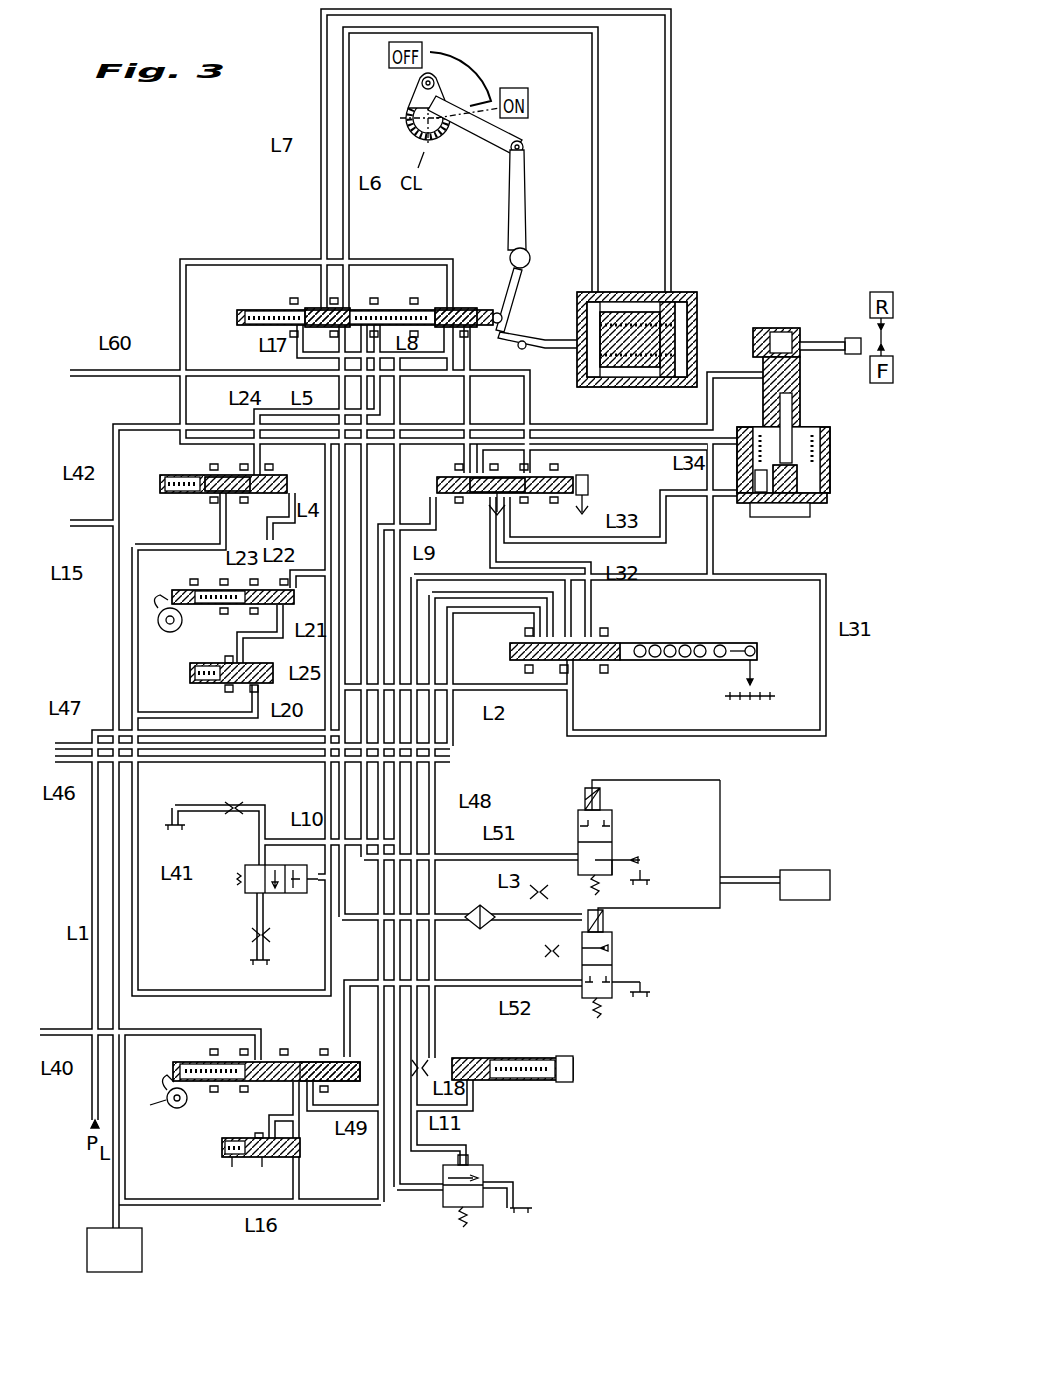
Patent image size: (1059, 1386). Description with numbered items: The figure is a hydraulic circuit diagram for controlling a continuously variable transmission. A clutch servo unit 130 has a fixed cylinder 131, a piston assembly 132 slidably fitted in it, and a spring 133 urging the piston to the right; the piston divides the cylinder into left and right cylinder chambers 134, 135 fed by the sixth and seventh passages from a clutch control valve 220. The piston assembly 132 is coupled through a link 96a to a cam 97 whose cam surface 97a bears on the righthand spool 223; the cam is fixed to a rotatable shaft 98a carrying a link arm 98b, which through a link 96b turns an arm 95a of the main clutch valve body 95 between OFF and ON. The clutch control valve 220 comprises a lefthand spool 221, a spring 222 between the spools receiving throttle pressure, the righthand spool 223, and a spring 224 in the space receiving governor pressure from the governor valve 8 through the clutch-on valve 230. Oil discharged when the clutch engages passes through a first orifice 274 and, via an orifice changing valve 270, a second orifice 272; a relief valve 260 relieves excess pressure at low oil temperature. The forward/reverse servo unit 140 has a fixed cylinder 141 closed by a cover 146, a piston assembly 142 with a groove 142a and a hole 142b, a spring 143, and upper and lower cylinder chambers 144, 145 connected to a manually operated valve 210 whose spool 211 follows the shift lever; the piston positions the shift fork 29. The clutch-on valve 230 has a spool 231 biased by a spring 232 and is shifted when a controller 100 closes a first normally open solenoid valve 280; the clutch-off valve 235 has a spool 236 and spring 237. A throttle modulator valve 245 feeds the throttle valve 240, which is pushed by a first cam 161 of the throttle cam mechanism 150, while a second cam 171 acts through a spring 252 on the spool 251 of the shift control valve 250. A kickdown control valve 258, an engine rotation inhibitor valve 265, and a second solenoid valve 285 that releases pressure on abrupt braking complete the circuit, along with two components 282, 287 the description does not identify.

The governor valve 8 is at (135, 1272).
The shift fork 29 is at (822, 340).
The main clutch valve body 95 is at (408, 122).
The arm 95a is at (412, 88).
The link 96a is at (545, 352).
The link 96b is at (508, 122).
The cam 97 is at (520, 300).
The cam surface 97a is at (497, 330).
The rotatable shaft 98a is at (530, 258).
The link arm 98b is at (522, 210).
The controller 100 is at (815, 870).
The clutch servo unit 130 is at (659, 328).
The fixed cylinder 131 is at (600, 300).
The piston assembly 132 is at (690, 340).
The spring 133 is at (640, 375).
The left cylinder chamber 134 is at (625, 312).
The right cylinder chamber 135 is at (680, 312).
The forward/reverse servo unit 140 is at (805, 450).
The fixed cylinder 141 is at (830, 480).
The piston assembly 142 is at (800, 372).
The groove 142a is at (800, 432).
The hole 142b is at (795, 402).
The spring 143 is at (820, 442).
The upper cylinder chamber 144 is at (822, 462).
The lower cylinder chamber 145 is at (760, 508).
The cover 146 is at (785, 518).
The throttle cam mechanism 150 is at (165, 634).
The first cam 161 is at (198, 586).
The second cam 171 is at (162, 1070).
The manually operated valve 210 is at (644, 646).
The spool 211 is at (732, 642).
The clutch control valve 220 is at (346, 268).
The lefthand spool 221 is at (320, 306).
The spring 222 is at (386, 306).
The righthand spool 223 is at (440, 308).
The spring 224 is at (258, 308).
The clutch-on valve 230 is at (539, 490).
The spool 231 is at (509, 506).
The spring 232 is at (552, 476).
The clutch-off valve 235 is at (202, 478).
The spool 236 is at (232, 476).
The spring 237 is at (182, 500).
The throttle valve 240 is at (214, 611).
The throttle modulator valve 245 is at (208, 694).
The shift control valve 250 is at (239, 1091).
The spool 251 is at (300, 1052).
The spring 252 is at (212, 1058).
The kickdown control valve 258 is at (205, 1172).
The relief valve 260 is at (485, 1174).
The engine rotation inhibitor valve 265 is at (545, 1097).
The orifice changing valve 270 is at (293, 895).
The second orifice 272 is at (250, 940).
The first orifice 274 is at (240, 805).
The first normally open solenoid valve 280 is at (618, 830).
The orifice 282 is at (548, 897).
The second solenoid valve 285 is at (630, 957).
The orifice 287 is at (545, 951).